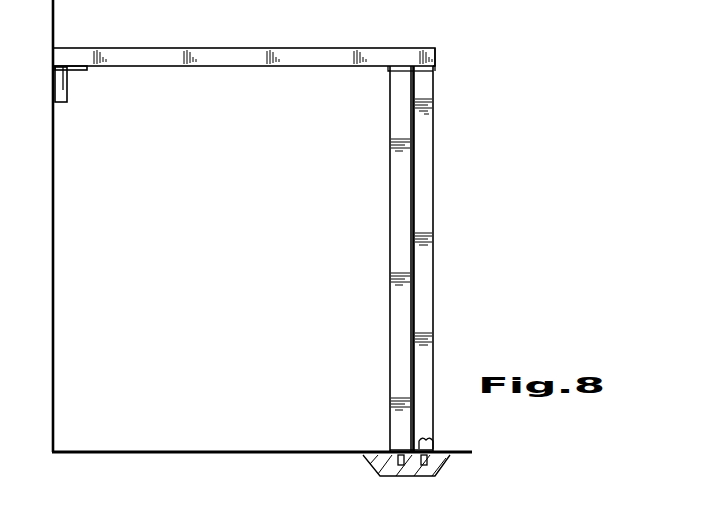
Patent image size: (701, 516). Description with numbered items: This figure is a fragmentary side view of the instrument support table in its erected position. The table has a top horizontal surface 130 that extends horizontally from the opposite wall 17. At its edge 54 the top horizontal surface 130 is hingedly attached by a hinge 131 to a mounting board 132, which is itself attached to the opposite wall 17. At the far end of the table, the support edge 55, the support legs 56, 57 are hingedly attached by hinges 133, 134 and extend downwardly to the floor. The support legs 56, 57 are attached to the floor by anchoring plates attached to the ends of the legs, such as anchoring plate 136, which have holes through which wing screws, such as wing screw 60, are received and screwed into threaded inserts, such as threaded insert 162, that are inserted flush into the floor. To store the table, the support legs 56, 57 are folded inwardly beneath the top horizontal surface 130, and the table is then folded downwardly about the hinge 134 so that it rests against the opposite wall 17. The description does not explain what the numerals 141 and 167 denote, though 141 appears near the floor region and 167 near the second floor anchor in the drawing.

The opposite wall 17 is at (52, 182).
The edge 54 is at (54, 56).
The support edge 55 is at (436, 57).
The support leg 56 is at (434, 186).
The support leg 57 is at (391, 186).
The wing screw 60 is at (432, 444).
The top horizontal surface 130 is at (158, 53).
The hinge 131 is at (69, 76).
The mounting board 132 is at (57, 93).
The hinge 133 is at (433, 70).
The hinge 134 is at (392, 70).
The anchoring plate 136 is at (403, 451).
The floor 141 is at (262, 481).
The threaded insert 162 is at (400, 473).
The fastener 167 is at (428, 478).